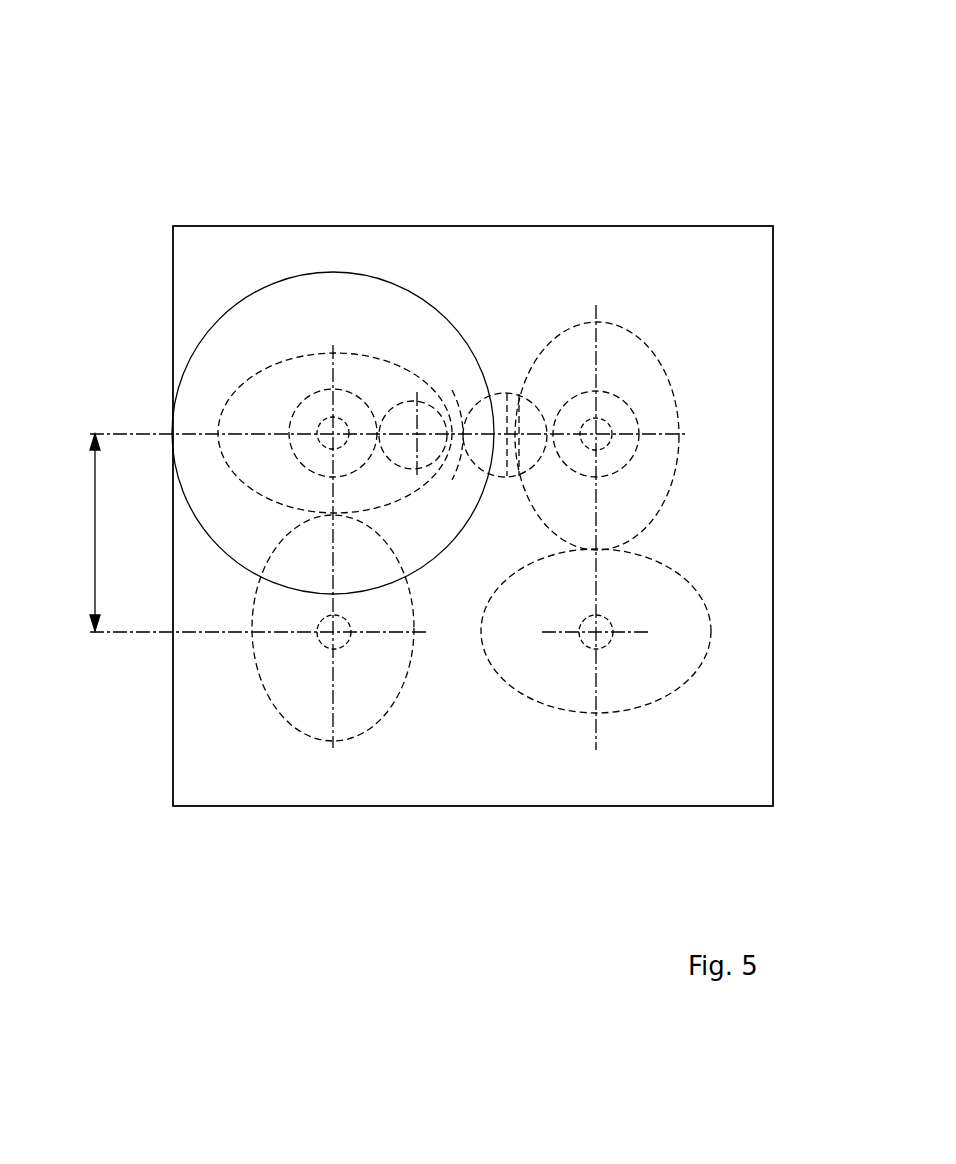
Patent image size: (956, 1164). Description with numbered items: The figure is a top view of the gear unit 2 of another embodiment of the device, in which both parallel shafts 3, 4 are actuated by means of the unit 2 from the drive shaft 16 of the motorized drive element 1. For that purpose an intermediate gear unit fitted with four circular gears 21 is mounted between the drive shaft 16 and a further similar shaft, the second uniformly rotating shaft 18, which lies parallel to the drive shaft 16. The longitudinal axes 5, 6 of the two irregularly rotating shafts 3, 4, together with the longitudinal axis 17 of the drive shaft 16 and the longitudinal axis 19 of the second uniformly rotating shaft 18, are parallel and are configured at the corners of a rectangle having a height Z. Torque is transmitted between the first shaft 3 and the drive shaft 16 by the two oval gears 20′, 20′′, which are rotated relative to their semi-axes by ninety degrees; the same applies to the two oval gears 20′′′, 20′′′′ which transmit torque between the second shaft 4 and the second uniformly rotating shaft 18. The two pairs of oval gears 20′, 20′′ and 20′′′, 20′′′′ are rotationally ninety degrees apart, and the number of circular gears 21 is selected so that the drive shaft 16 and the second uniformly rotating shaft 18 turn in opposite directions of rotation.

The motorized drive element 1 is at (435, 350).
The gear unit 2 is at (257, 550).
The first shaft 3 is at (342, 647).
The second shaft 4 is at (590, 637).
The longitudinal axis of the first shaft 5 is at (330, 636).
The longitudinal axis of the second shaft 6 is at (597, 637).
The drive shaft 16 is at (320, 432).
The longitudinal axis of the drive shaft 17 is at (282, 388).
The second uniformly rotating shaft 18 is at (607, 438).
The longitudinal axis of the second uniformly rotating shaft 19 is at (598, 432).
The oval gear 20′ is at (331, 429).
The oval gear 20′′ is at (322, 718).
The oval gear 20′′′ is at (632, 358).
The oval gear 20′′′′ is at (672, 656).
The circular gears 21 is at (407, 410).